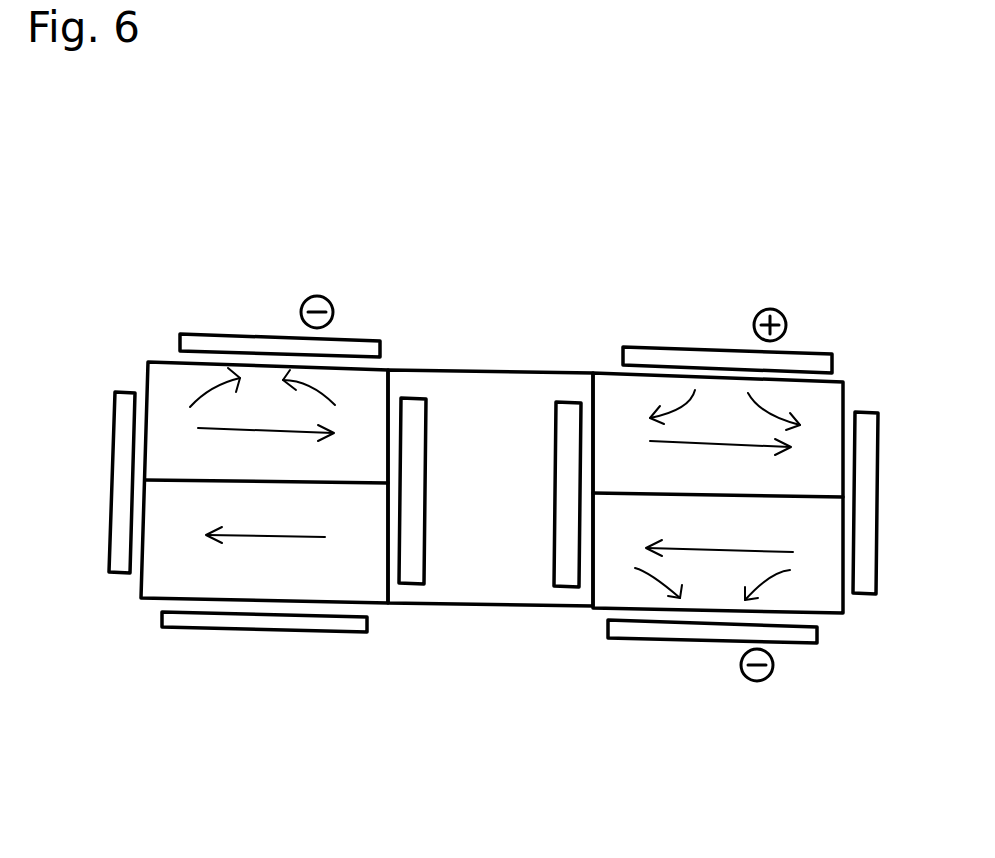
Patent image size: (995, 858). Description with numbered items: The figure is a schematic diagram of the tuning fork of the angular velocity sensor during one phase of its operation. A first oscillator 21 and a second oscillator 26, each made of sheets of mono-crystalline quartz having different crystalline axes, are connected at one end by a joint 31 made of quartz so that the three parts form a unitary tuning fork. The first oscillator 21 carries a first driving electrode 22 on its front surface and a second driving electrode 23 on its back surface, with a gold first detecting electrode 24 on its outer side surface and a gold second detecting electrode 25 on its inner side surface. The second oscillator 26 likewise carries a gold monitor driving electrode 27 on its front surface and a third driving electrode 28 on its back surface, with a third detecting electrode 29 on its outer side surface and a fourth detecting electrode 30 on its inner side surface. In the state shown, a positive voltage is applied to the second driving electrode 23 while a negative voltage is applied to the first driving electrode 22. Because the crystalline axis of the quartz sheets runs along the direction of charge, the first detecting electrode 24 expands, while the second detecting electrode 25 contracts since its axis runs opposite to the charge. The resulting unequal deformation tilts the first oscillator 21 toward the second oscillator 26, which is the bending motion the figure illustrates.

The first oscillator 21 is at (723, 590).
The first driving electrode 22 is at (633, 630).
The second driving electrode 23 is at (673, 355).
The first detecting electrode 24 is at (860, 590).
The second detecting electrode 25 is at (563, 583).
The second oscillator 26 is at (222, 582).
The monitor driving electrode 27 is at (300, 628).
The third driving electrode 28 is at (228, 345).
The third detecting electrode 29 is at (118, 563).
The fourth detecting electrode 30 is at (407, 578).
The joint 31 is at (470, 385).